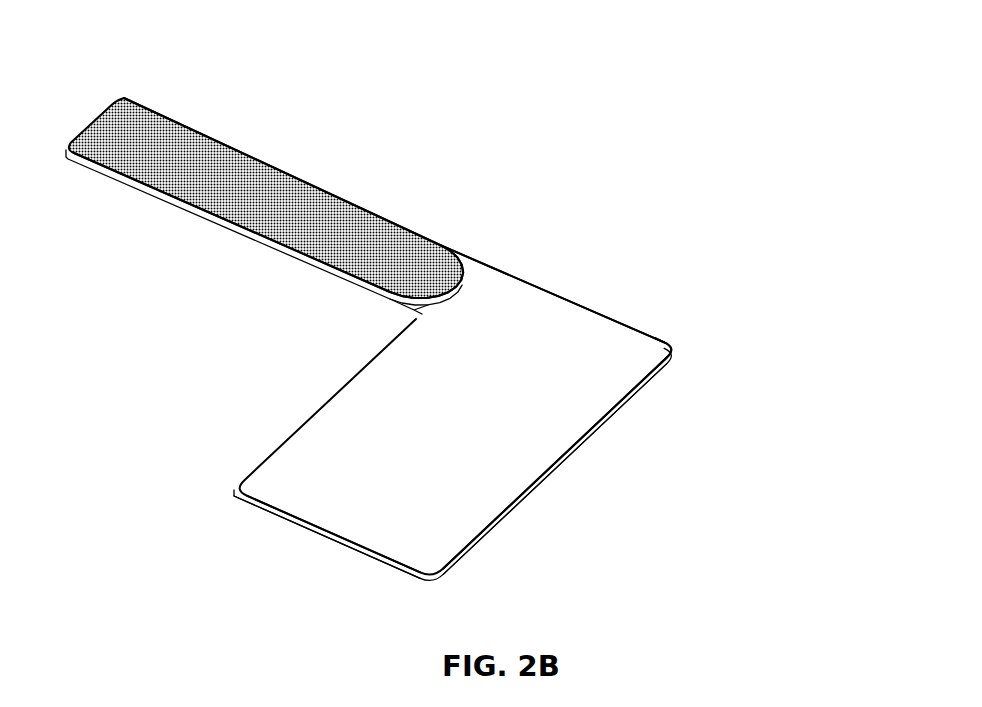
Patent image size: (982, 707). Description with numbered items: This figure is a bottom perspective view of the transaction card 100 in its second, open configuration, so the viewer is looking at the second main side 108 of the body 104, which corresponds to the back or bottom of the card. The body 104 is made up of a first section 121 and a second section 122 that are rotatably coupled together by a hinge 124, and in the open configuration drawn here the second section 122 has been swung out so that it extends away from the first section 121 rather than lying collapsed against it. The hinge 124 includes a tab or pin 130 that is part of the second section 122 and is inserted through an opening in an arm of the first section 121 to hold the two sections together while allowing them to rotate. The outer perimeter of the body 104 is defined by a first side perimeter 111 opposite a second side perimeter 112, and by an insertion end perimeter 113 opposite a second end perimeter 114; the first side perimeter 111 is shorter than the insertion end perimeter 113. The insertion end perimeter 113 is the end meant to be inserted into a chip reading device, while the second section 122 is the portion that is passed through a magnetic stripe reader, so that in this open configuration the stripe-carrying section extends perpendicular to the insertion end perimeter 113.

The transaction card 100 is at (464, 334).
The body 104 is at (266, 423).
The second main side 108 is at (568, 445).
The first side perimeter 111 is at (556, 294).
The second side perimeter 112 is at (334, 540).
The insertion end perimeter 113 is at (539, 490).
The second end perimeter 114 is at (317, 188).
The first section 121 is at (652, 342).
The second section 122 is at (372, 217).
The hinge 124 is at (370, 322).
The pin 130 is at (242, 178).